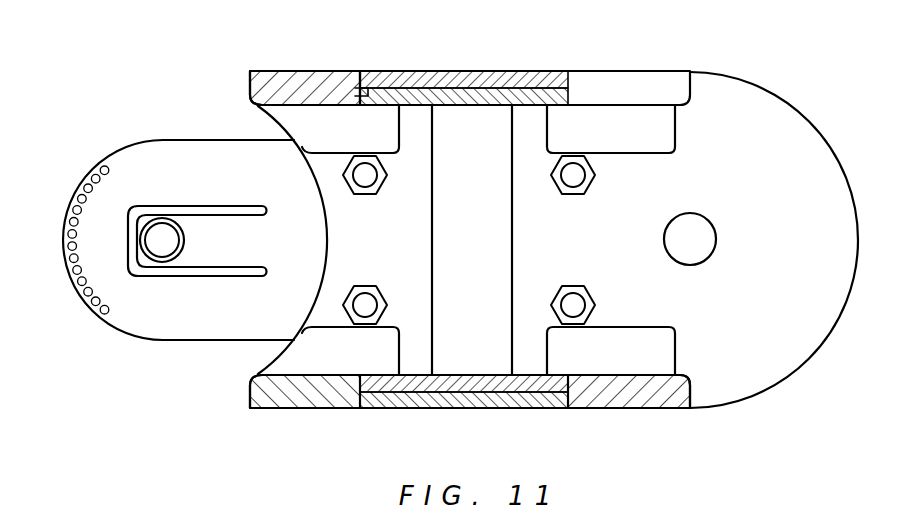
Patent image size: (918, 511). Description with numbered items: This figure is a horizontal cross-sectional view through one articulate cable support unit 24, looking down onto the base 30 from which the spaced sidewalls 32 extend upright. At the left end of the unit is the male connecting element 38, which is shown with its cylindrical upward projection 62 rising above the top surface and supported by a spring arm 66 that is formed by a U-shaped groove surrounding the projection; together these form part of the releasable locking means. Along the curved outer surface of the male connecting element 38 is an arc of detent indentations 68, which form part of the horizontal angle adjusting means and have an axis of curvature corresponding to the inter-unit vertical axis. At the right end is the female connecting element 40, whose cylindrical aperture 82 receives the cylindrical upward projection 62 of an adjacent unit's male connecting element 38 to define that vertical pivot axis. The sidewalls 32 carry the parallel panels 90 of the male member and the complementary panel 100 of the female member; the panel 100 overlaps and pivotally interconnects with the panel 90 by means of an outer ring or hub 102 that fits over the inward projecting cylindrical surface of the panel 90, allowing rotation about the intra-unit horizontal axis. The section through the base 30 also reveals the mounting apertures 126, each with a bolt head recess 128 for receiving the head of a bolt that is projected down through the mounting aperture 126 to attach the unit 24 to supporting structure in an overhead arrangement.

The articulate cable support unit 24 is at (643, 52).
The base 30 is at (523, 180).
The sidewalls 32 is at (291, 404).
The male connecting element 38 is at (286, 72).
The female connecting element 40 is at (773, 219).
The cylindrical upward projection 62 is at (162, 230).
The spring arm 66 is at (207, 258).
The detent indentations 68 is at (77, 190).
The cylindrical aperture 82 is at (710, 250).
The panel 90 is at (460, 71).
The panel 100 is at (447, 106).
The outer ring or hub 102 is at (363, 71).
The mounting apertures 126 is at (368, 174).
The bolt head recess 128 is at (353, 197).